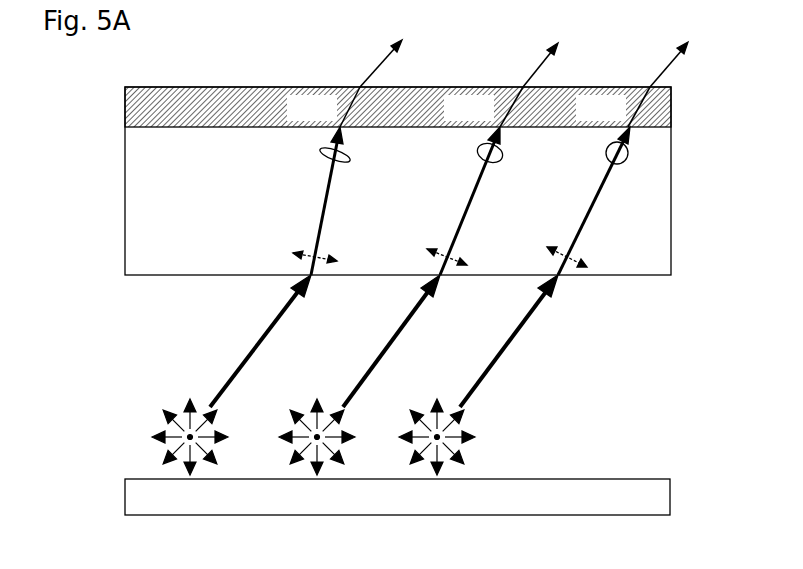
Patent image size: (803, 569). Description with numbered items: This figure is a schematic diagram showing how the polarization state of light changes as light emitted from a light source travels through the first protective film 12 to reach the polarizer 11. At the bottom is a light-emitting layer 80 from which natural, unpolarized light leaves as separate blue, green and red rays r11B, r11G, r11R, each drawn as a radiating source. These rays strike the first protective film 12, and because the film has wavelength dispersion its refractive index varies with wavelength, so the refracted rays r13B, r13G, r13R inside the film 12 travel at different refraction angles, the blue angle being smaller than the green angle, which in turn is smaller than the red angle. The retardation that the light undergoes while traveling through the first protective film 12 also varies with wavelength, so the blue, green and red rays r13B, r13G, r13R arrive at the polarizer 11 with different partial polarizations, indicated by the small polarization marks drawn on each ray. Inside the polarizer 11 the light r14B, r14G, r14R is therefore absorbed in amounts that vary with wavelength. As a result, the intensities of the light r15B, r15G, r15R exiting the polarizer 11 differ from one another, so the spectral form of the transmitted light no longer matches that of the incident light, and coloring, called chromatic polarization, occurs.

The polarizer 11 is at (672, 108).
The first protective film 12 is at (663, 197).
The light emitting layer 80 is at (670, 497).
The blue component of natural light r11 r11B is at (253, 341).
The green component of natural light r11 r11G is at (385, 341).
The red component of natural light r11 r11R is at (503, 341).
The blue light r13B is at (314, 201).
The green light r13G is at (461, 201).
The red light r13R is at (585, 201).
The blue light traveling through the polarizer r14B is at (325, 107).
The green light traveling through the polarizer r14G is at (485, 107).
The red light traveling through the polarizer r14R is at (615, 107).
The blue light going out of the polarizer r15B is at (362, 63).
The green light going out of the polarizer r15G is at (517, 65).
The red light going out of the polarizer r15R is at (650, 64).